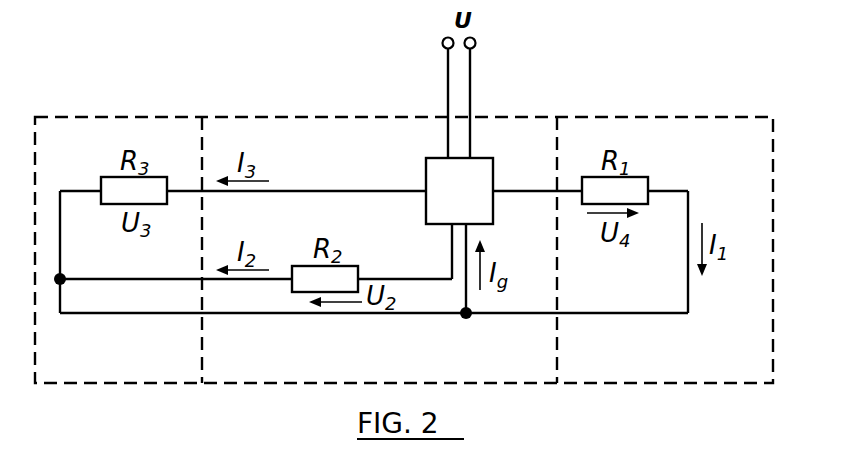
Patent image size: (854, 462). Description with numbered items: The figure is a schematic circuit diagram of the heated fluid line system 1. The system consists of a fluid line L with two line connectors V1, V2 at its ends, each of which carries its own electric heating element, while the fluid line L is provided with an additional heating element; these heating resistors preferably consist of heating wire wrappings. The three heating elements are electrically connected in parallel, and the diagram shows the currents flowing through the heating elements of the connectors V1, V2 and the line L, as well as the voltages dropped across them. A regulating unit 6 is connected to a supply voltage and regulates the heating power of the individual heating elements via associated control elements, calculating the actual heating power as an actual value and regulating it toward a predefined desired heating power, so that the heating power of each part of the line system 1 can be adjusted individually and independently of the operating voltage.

The fluid line system 1 is at (227, 396).
The regulating unit 6 is at (466, 201).
The line connector V1 is at (656, 110).
The line connector V2 is at (116, 110).
The fluid line L is at (323, 110).